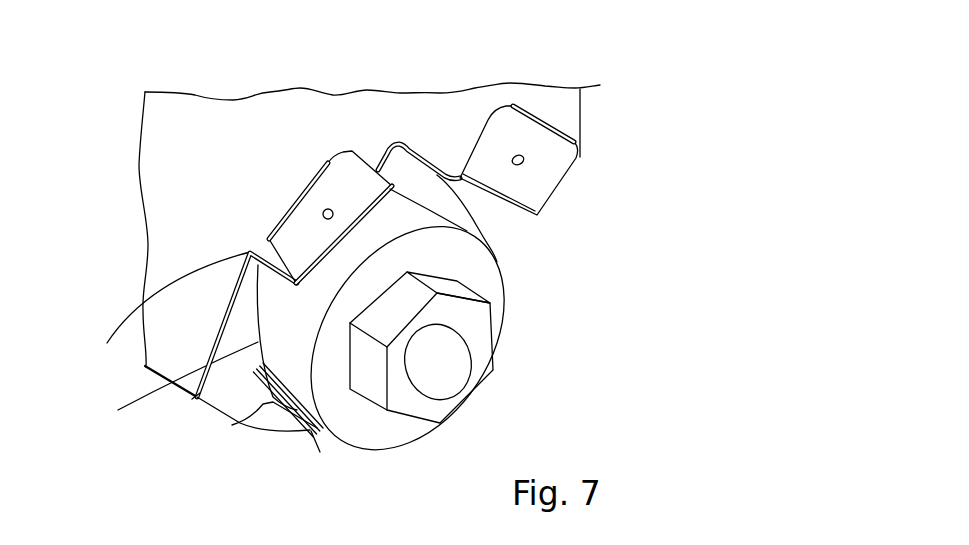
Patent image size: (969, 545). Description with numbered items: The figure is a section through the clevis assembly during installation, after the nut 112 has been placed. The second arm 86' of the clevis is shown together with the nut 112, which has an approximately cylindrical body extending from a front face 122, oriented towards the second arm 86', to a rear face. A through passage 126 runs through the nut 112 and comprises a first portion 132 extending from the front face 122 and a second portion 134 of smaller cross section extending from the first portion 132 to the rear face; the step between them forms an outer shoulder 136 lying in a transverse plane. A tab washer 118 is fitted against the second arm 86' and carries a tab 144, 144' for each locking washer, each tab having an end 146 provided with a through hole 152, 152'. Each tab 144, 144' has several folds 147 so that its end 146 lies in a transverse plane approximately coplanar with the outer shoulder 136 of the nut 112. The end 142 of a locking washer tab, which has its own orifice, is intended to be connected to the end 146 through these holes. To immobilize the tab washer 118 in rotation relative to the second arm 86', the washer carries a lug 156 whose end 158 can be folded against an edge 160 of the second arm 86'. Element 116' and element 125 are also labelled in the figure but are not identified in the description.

The second arm 86' is at (311, 225).
The nut 112 is at (304, 396).
The bracket plate 116' is at (567, 117).
The tab washer 118 is at (225, 383).
The front face 122 is at (146, 383).
The nut 125 is at (474, 359).
The through passage 126 is at (437, 363).
The first portion 132 is at (388, 220).
The second portion 134 is at (460, 293).
The outer shoulder 136 is at (447, 255).
The end 142 is at (262, 320).
The tab 144 is at (152, 265).
The tab 144' is at (457, 107).
The end 146 is at (312, 156).
The fold 147 is at (391, 146).
The through hole 152 is at (282, 124).
The through hole 152' is at (593, 128).
The lug 156 is at (240, 407).
The end 158 is at (180, 394).
The edge 160 is at (318, 448).